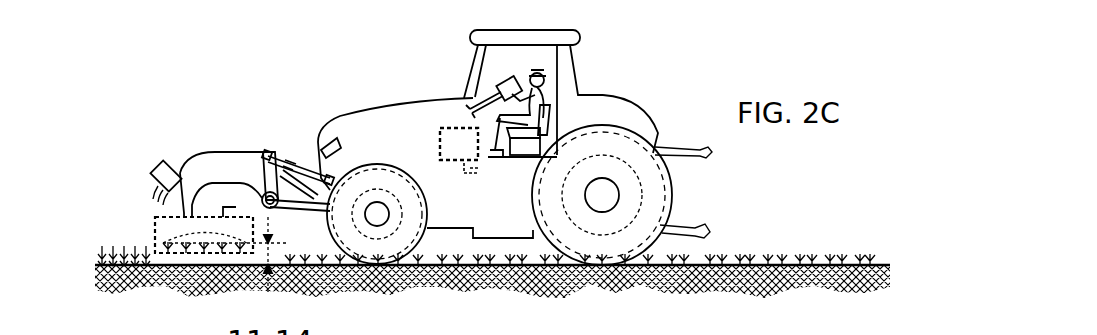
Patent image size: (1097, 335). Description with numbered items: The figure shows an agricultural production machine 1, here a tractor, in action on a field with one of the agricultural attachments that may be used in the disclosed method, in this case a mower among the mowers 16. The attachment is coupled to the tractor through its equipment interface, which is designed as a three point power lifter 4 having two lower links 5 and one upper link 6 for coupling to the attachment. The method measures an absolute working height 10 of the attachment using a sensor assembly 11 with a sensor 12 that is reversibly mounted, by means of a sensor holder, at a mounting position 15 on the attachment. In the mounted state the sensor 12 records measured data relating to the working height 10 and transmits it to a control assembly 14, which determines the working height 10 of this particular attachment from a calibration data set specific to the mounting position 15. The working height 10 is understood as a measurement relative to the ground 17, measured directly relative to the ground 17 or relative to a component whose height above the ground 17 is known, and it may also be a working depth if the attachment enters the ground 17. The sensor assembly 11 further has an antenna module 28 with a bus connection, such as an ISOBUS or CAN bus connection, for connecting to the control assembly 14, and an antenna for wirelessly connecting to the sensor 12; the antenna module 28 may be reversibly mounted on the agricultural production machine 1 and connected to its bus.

The agricultural production machine 1 is at (408, 115).
The three point power lifter 4 is at (262, 128).
The mowers 16 is at (232, 167).
The lower links 5 is at (305, 219).
The upper link 6 is at (291, 160).
The working height 10 is at (262, 247).
The sensor assembly 11 is at (134, 182).
The control assembly 14 is at (455, 140).
The sensor 12 is at (170, 166).
The mounting position 15 is at (181, 156).
The ground 17 is at (433, 263).
The antenna module 28 is at (462, 173).